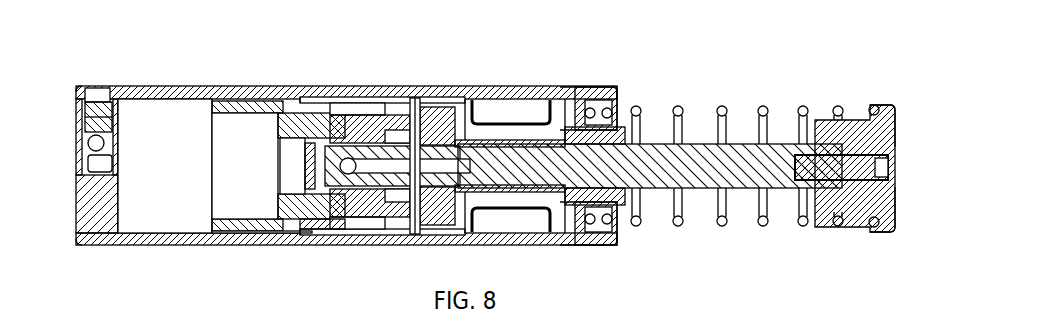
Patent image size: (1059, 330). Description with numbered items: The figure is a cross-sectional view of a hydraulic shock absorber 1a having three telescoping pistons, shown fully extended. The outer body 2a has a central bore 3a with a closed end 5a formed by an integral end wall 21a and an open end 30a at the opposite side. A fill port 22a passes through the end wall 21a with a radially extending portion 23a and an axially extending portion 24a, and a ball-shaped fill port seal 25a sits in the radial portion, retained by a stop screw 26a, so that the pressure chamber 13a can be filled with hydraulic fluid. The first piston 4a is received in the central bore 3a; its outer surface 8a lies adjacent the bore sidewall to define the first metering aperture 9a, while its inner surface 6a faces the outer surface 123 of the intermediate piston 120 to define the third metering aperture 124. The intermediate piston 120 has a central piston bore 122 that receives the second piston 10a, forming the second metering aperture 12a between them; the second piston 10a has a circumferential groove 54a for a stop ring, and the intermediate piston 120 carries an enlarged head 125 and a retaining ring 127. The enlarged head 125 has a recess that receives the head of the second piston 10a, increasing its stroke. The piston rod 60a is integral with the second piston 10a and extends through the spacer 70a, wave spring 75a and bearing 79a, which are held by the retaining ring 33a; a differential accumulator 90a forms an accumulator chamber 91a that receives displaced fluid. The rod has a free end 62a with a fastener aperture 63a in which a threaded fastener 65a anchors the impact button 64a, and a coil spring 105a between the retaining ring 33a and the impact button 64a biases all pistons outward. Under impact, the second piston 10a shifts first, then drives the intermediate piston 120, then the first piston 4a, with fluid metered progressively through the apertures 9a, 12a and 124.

The hydraulic shock absorber 1a is at (772, 43).
The outer body 2a is at (549, 84).
The central bore 3a is at (155, 108).
The first piston 4a is at (261, 85).
The closed end 5a is at (113, 185).
The inner surface 6a is at (303, 100).
The outer surface 8a is at (234, 88).
The first metering aperture 9a is at (240, 229).
The second piston 10a is at (300, 180).
The second metering aperture 12a is at (351, 232).
The pressure chamber 13a is at (169, 152).
The end wall 21a is at (90, 211).
The fill port 22a is at (93, 168).
The radially extending portion 23a is at (86, 118).
The axially extending portion 24a is at (108, 100).
The fill port seal 25a is at (88, 142).
The stop screw 26a is at (95, 88).
The open end 30a is at (618, 108).
The retaining ring 33a is at (583, 100).
The circumferential groove 54a is at (290, 142).
The piston rod 60a is at (742, 195).
The free end 62a is at (852, 140).
The fastener aperture 63a is at (835, 175).
The impact button 64a is at (889, 105).
The threaded fastener 65a is at (887, 227).
The spacer 70a is at (347, 98).
The wave spring 75a is at (427, 108).
The bearing 79a is at (607, 101).
The differential accumulator 90a is at (520, 100).
The accumulator chamber 91a is at (520, 205).
The spring 105a is at (762, 106).
The intermediate piston 120 is at (275, 118).
The central piston bore 122 is at (285, 162).
The outer surface 123 is at (365, 115).
The third metering aperture 124 is at (342, 100).
The enlarged head 125 is at (395, 227).
The retaining ring 127 is at (260, 233).